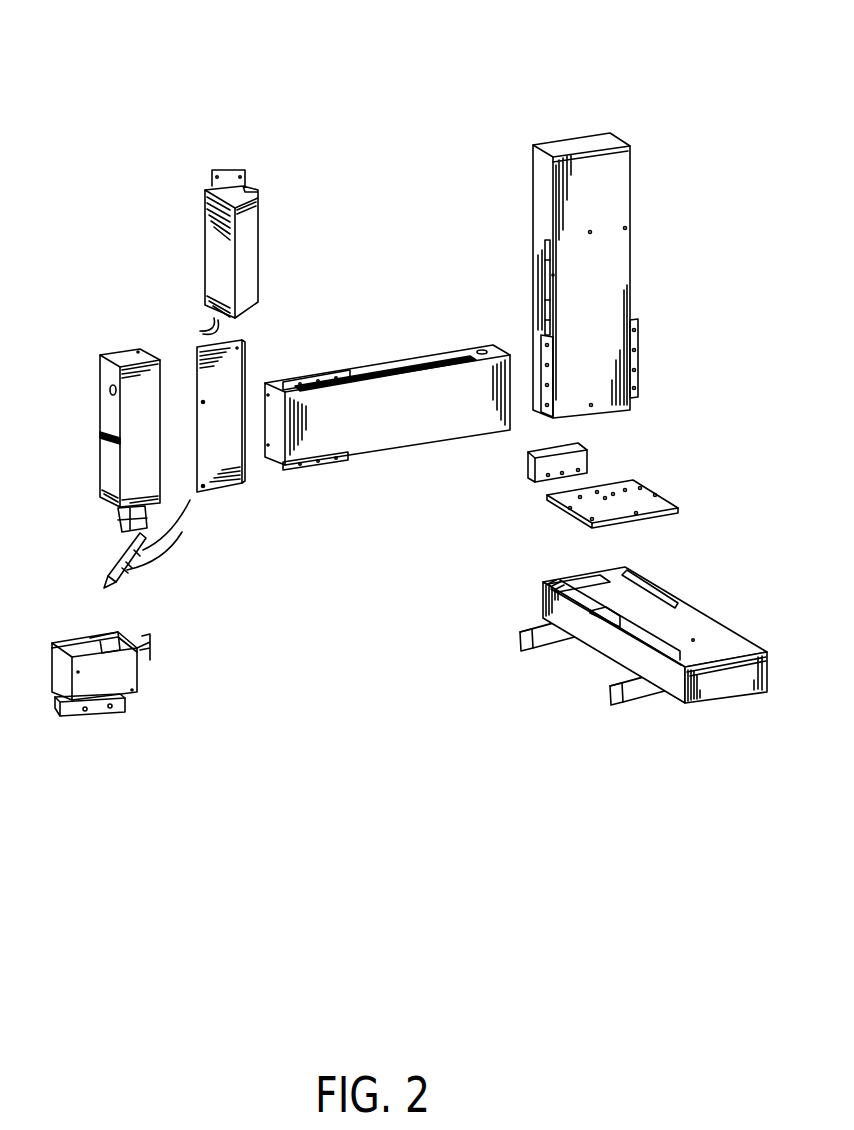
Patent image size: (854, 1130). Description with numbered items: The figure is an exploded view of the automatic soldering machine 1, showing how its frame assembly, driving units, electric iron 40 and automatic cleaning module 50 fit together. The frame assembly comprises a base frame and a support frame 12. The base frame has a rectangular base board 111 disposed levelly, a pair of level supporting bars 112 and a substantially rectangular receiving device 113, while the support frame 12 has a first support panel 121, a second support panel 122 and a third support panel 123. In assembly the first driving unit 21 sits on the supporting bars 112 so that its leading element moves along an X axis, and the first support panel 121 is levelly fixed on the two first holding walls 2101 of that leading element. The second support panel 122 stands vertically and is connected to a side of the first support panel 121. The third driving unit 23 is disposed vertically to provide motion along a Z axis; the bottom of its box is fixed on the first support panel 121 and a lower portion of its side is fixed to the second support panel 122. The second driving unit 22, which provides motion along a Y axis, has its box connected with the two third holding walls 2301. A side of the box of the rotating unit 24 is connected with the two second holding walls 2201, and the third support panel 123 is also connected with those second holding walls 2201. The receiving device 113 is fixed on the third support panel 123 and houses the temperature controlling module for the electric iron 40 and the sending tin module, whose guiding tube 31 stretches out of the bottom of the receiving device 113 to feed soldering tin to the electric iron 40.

The automatic soldering machine 1 is at (113, 31).
The support frame 12 is at (443, 558).
The first driving unit 21 is at (692, 628).
The second driving unit 22 is at (458, 357).
The third driving unit 23 is at (618, 210).
The rotating unit 24 is at (107, 412).
The guiding tube 31 is at (207, 333).
The electric iron 40 is at (118, 570).
The automatic cleaning module 50 is at (58, 642).
The base board 111 is at (56, 704).
The supporting bars 112 is at (521, 645).
The receiving device 113 is at (218, 232).
The first support panel 121 is at (560, 503).
The second support panel 122 is at (530, 468).
The third support panel 123 is at (248, 480).
The first holding walls 2101 is at (640, 577).
The second holding walls 2201 is at (318, 377).
The third holding walls 2301 is at (632, 346).